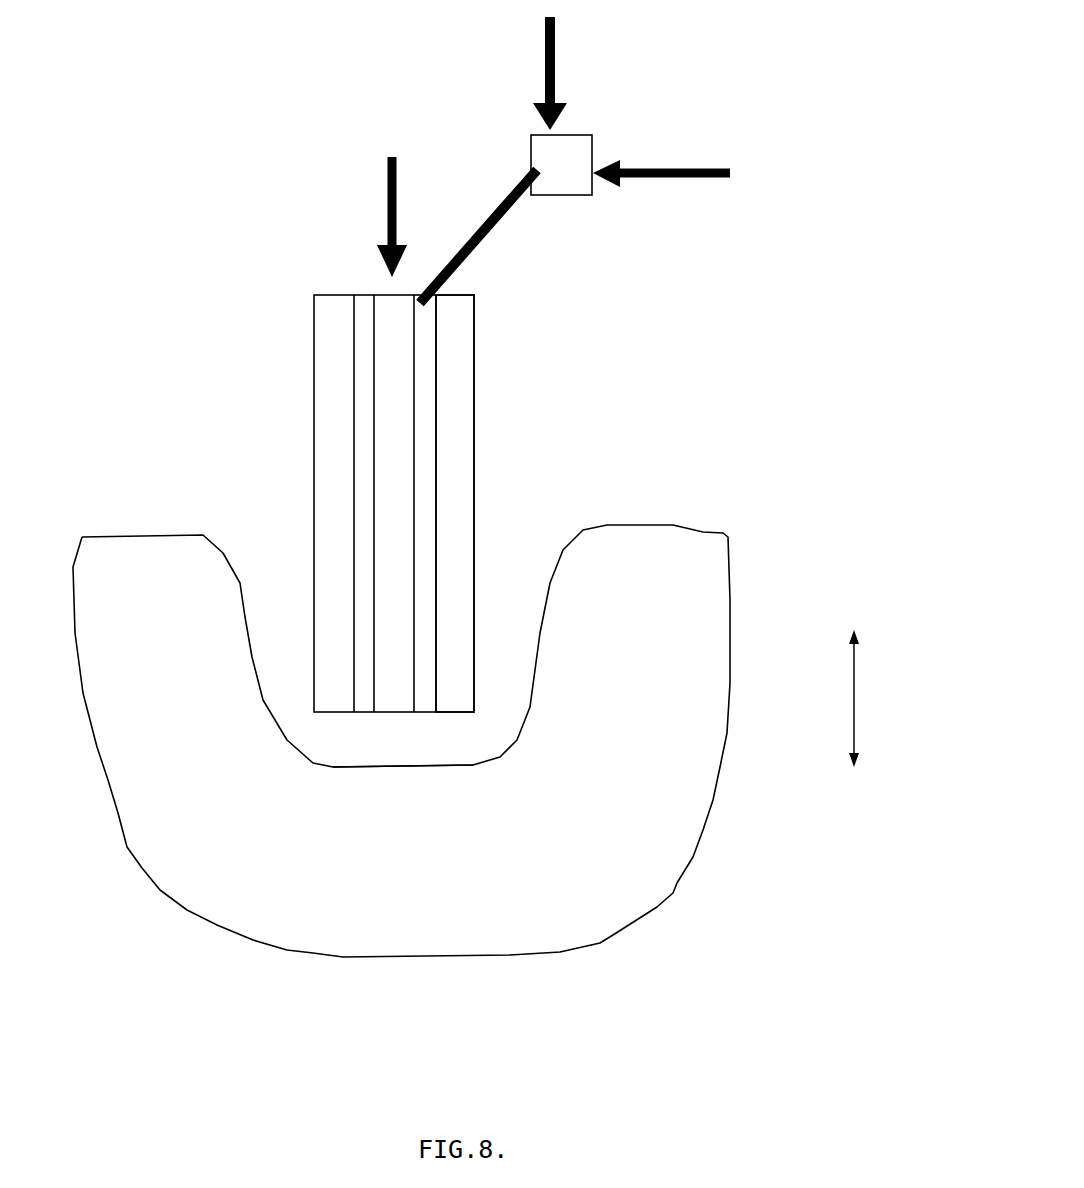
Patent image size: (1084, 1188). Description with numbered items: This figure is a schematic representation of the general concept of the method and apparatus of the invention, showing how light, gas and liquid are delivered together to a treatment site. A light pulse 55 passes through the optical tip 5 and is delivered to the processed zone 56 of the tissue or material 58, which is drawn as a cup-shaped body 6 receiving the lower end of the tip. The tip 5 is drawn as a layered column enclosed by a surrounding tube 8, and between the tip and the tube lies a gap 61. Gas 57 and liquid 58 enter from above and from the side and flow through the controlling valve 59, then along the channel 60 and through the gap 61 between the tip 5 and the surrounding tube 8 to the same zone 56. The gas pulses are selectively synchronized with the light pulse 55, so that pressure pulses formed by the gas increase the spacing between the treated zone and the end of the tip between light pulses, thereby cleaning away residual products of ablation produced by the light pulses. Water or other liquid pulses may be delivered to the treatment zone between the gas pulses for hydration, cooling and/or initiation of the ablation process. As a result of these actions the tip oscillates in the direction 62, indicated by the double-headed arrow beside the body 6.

The optical tip 5 is at (385, 412).
The holder 6 is at (703, 642).
The surrounding tube 8 is at (463, 388).
The light pulse 55 is at (378, 191).
The processed zone 56 is at (455, 774).
The gas 57 is at (562, 70).
The liquid 58 is at (676, 160).
The controlling valve 59 is at (566, 185).
The channel 60 is at (483, 203).
The gap 61 is at (433, 516).
The direction 62 is at (893, 698).